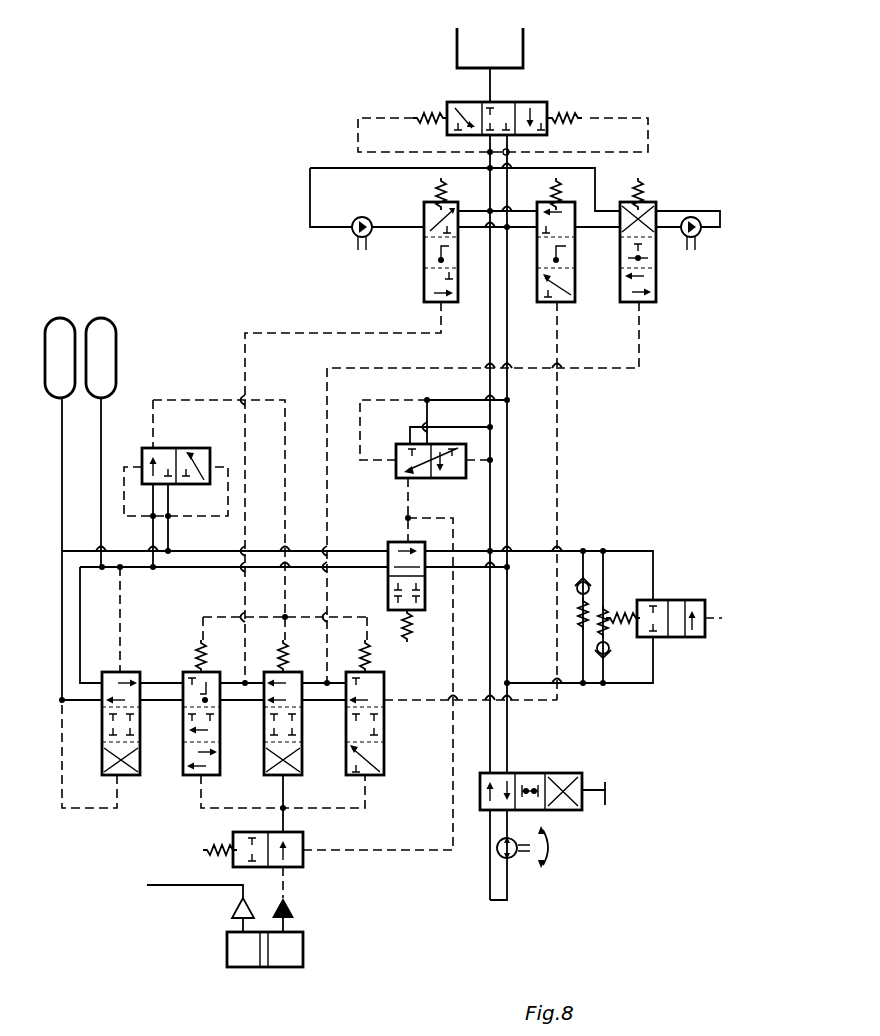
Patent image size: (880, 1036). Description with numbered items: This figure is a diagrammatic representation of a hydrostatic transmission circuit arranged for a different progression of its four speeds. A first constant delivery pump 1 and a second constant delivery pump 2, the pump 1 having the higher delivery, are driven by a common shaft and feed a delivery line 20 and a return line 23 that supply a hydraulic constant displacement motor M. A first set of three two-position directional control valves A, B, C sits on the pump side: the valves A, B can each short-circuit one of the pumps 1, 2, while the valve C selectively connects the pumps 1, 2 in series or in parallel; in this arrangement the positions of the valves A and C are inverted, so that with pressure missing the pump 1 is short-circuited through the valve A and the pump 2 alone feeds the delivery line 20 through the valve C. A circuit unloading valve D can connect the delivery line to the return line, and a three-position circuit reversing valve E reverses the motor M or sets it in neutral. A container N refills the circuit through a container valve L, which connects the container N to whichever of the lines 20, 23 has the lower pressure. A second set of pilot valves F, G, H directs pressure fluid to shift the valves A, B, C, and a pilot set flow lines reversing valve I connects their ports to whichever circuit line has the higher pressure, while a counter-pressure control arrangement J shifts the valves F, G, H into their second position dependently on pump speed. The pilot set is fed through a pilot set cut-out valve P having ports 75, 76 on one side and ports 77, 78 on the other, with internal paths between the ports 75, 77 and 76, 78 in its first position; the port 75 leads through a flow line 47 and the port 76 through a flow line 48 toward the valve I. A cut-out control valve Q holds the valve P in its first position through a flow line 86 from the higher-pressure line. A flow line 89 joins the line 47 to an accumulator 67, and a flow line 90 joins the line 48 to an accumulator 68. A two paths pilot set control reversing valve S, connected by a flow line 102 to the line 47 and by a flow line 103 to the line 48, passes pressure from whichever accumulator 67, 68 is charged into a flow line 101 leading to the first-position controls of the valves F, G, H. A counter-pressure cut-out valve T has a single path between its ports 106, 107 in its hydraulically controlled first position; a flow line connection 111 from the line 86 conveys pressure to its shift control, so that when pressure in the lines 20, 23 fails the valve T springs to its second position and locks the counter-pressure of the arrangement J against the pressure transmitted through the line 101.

The first constant delivery pump 1 is at (352, 234).
The second constant delivery pump 2 is at (702, 238).
The delivery line 20 is at (508, 490).
The return line 23 is at (490, 330).
The flow line 47 is at (208, 570).
The flow line 48 is at (252, 551).
The accumulator 67 is at (116, 333).
The accumulator 68 is at (60, 318).
The port of valve P 75 is at (386, 575).
The port of valve P 76 is at (388, 549).
The port of valve P 77 is at (425, 578).
The port of valve P 78 is at (425, 549).
The flow line 86 is at (405, 486).
The flow line 89 is at (101, 418).
The flow line 90 is at (62, 443).
The flow line 101 is at (153, 424).
The flow line 102 is at (152, 524).
The flow line 103 is at (170, 534).
The port of valve T 106 is at (288, 868).
The port of valve T 107 is at (282, 832).
The flow line connection 111 is at (450, 668).
The directional control valve A is at (422, 278).
The directional control valve B is at (560, 304).
The directional control valve C is at (646, 304).
The circuit unloading valve D is at (678, 598).
The circuit reversing valve E is at (572, 774).
The directional control pilot valve F is at (190, 778).
The directional control pilot valve G is at (296, 778).
The directional control pilot valve H is at (378, 778).
The pilot set flow lines reversing valve I is at (126, 778).
The counter-pressure control arrangement J is at (303, 948).
The container valve L is at (547, 104).
The hydraulic constant displacement motor M is at (514, 856).
The container N is at (523, 50).
The pilot set cut-out valve P is at (413, 612).
The cut-out control valve Q is at (450, 480).
The two paths pilot set control reversing valve S is at (210, 448).
The counter-pressure cut-out valve T is at (303, 842).